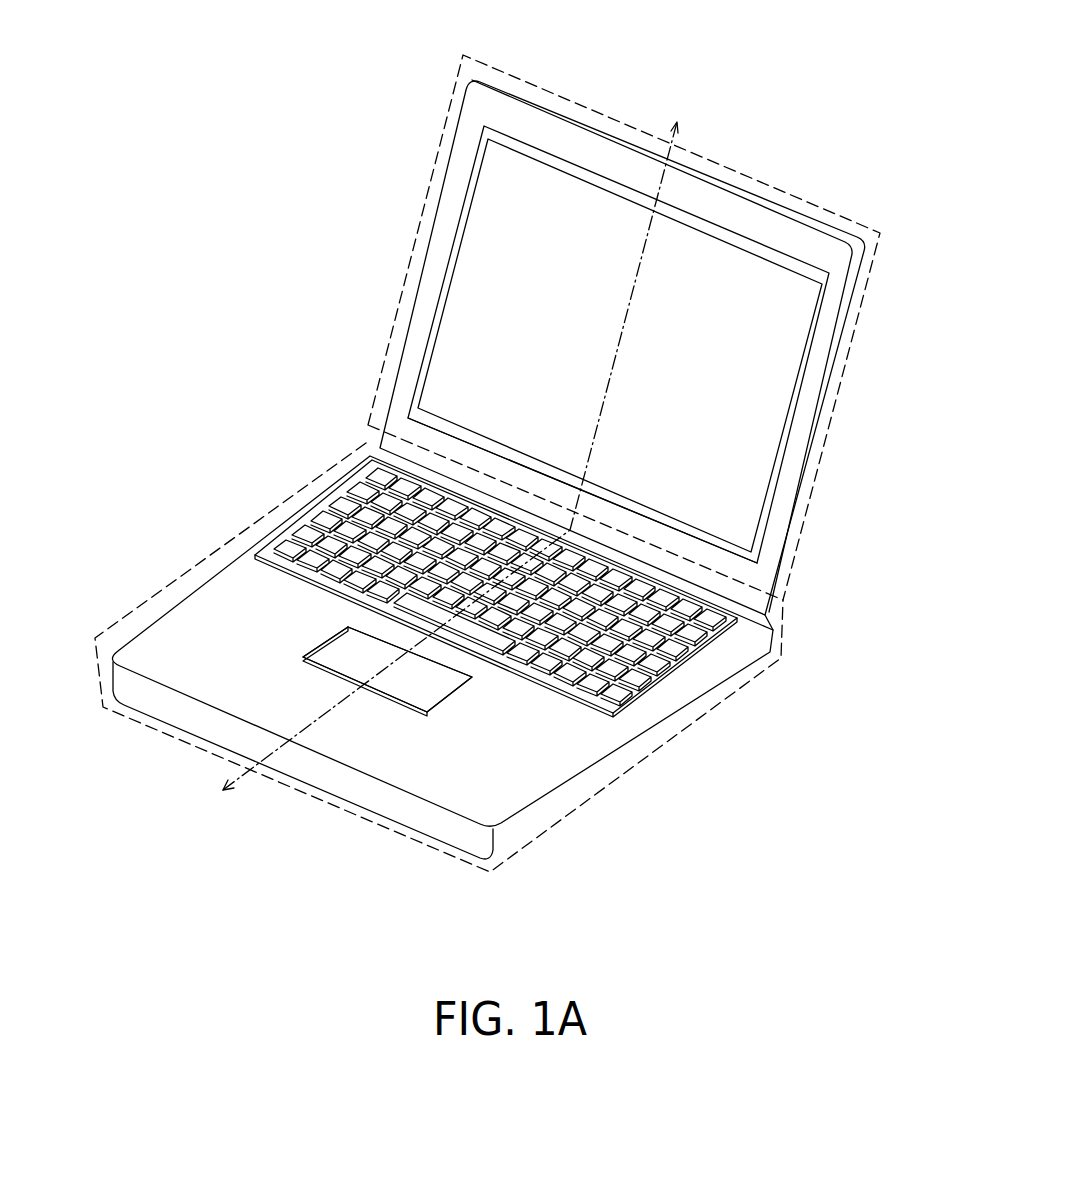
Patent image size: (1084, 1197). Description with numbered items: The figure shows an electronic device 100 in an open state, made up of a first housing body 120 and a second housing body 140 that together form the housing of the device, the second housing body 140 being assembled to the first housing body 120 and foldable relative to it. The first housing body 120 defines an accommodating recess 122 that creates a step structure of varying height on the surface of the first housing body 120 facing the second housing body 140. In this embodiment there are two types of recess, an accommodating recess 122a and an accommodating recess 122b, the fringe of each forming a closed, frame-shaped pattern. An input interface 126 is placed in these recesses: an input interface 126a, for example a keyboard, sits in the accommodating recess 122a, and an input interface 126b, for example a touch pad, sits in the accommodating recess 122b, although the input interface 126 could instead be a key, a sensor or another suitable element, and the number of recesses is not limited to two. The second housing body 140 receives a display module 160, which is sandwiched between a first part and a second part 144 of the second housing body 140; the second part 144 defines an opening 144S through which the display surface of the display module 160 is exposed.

The electronic device 100 is at (506, 502).
The first housing body 120 is at (487, 644).
The accommodating recess 122 is at (459, 562).
The accommodating recess 122a is at (295, 528).
The accommodating recess 122b is at (332, 642).
The input interface 126 is at (508, 674).
The input interface 126a is at (628, 680).
The input interface 126b is at (430, 688).
The second housing body 140 is at (642, 335).
The second part 144 is at (787, 492).
The opening 144S is at (786, 421).
The display module 160 is at (787, 368).